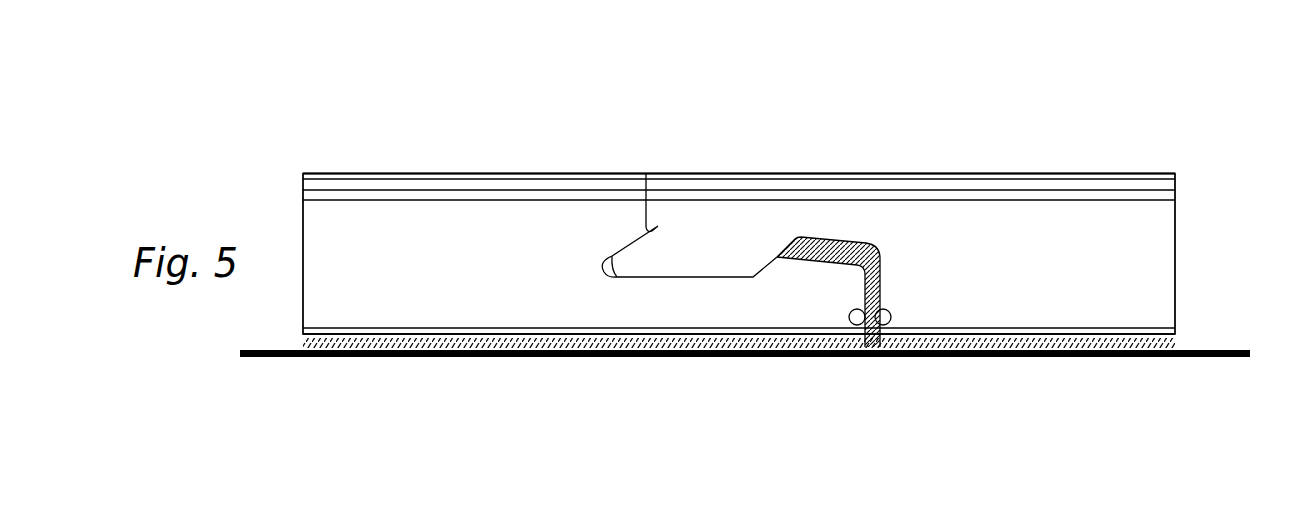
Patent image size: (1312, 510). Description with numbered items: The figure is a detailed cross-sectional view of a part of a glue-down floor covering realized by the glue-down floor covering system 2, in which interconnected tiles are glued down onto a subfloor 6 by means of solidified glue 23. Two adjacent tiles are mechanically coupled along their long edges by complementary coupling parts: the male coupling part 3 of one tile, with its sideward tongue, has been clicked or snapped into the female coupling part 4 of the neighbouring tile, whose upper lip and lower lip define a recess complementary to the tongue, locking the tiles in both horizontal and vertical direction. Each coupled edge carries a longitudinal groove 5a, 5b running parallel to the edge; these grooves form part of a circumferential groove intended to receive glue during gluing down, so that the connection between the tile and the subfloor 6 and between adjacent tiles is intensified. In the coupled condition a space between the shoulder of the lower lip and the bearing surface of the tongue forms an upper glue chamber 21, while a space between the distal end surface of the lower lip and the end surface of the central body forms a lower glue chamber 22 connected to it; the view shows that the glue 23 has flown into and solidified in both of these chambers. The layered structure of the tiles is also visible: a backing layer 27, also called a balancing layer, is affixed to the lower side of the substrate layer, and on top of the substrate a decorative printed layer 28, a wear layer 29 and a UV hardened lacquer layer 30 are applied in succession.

The glue-down floor covering system 2 is at (432, 145).
The male coupling part 3 is at (729, 148).
The female coupling part 4 is at (683, 364).
The longitudinal groove 5a is at (892, 318).
The longitudinal groove 5b is at (849, 318).
The subfloor 6 is at (1195, 359).
The upper glue chamber 21 is at (840, 250).
The lower glue chamber 22 is at (882, 290).
The solidified glue 23 is at (1017, 359).
The backing layer 27 is at (1176, 331).
The decorative printed layer 28 is at (1176, 191).
The wear layer 29 is at (1176, 180).
The UV hardened lacquer layer 30 is at (1163, 172).